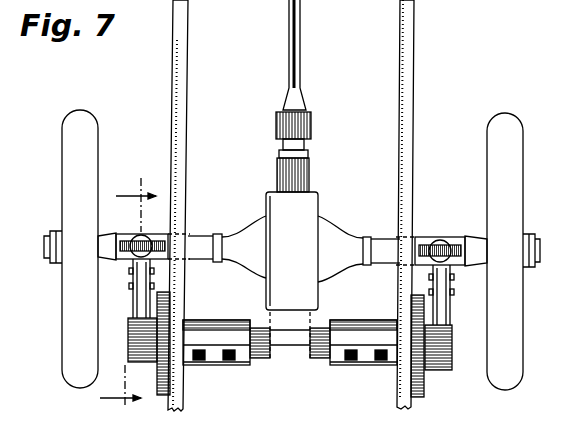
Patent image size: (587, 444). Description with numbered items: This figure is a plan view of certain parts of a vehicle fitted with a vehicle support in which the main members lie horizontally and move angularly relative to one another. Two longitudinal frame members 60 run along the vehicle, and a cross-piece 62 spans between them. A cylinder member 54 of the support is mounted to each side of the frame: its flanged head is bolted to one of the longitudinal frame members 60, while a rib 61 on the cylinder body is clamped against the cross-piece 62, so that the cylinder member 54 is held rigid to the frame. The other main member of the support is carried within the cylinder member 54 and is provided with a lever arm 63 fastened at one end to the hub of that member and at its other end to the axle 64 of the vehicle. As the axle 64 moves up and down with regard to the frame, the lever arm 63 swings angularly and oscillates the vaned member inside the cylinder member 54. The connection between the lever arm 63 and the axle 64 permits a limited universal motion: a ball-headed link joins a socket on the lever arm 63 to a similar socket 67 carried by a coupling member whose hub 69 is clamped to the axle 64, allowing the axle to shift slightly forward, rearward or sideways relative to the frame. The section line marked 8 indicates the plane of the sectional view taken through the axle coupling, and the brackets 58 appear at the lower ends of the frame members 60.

The section line 8- 8 is at (128, 301).
The cylinder member 54 is at (226, 365).
The post bracket 58 is at (165, 382).
The longitudinal frame member 60 is at (178, 60).
The rib 61 is at (258, 360).
The cross-piece 62 is at (292, 337).
The lever arm 63 is at (141, 308).
The axle 64 is at (193, 243).
The socket 67 is at (140, 240).
The hub 69 is at (160, 238).